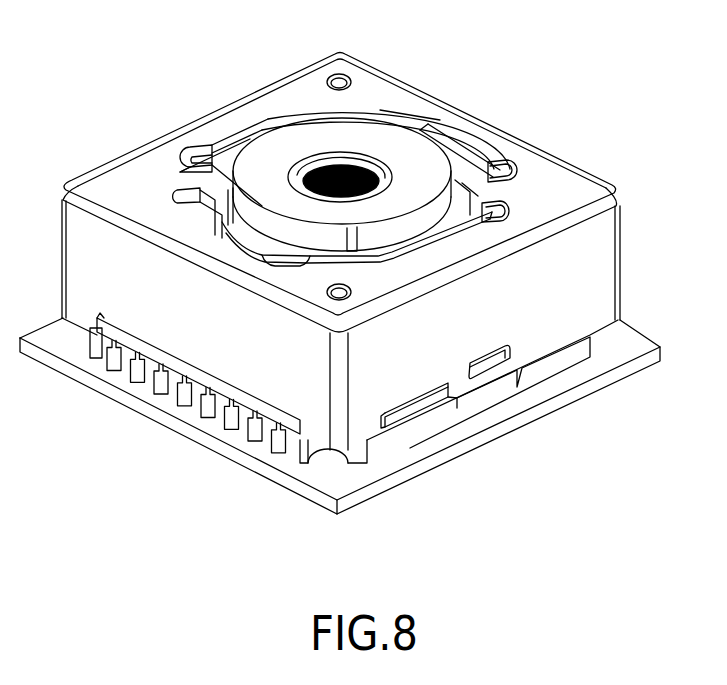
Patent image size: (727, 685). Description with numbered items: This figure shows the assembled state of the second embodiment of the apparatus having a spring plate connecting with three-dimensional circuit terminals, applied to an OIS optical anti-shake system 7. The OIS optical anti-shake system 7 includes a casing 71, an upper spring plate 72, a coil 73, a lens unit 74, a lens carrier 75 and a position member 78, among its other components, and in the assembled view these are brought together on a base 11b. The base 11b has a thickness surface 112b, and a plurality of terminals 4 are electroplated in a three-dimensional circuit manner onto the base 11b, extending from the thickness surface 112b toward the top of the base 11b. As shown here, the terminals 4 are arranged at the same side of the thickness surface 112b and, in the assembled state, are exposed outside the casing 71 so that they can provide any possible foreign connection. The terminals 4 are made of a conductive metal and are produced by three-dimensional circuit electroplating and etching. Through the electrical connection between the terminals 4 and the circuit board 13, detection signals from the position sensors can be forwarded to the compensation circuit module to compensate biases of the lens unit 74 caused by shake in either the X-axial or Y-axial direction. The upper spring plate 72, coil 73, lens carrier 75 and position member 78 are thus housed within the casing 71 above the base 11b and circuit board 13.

The OIS optical anti-shake system 7 is at (560, 91).
The casing 71 is at (598, 247).
The upper spring plate 72 is at (265, 128).
The coil 73 is at (508, 197).
The lens unit 74 is at (393, 147).
The lens carrier 75 is at (512, 170).
The position member 78 is at (458, 150).
The base 11b is at (533, 375).
The circuit board 13 is at (347, 483).
The terminals 4 is at (192, 402).
The thickness surface 112b is at (243, 430).